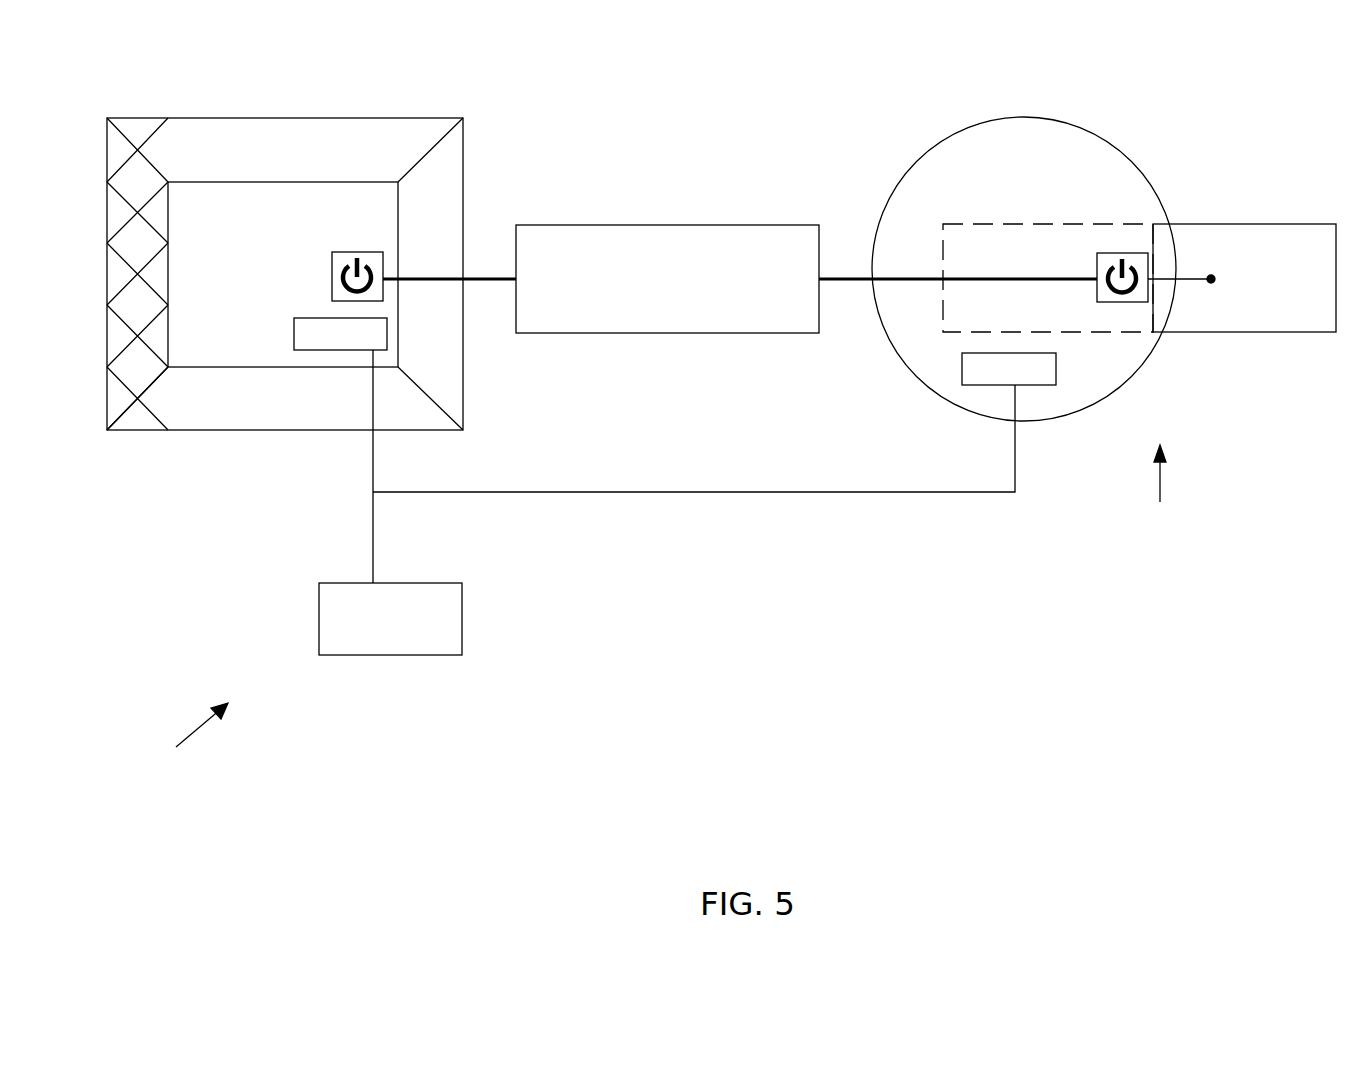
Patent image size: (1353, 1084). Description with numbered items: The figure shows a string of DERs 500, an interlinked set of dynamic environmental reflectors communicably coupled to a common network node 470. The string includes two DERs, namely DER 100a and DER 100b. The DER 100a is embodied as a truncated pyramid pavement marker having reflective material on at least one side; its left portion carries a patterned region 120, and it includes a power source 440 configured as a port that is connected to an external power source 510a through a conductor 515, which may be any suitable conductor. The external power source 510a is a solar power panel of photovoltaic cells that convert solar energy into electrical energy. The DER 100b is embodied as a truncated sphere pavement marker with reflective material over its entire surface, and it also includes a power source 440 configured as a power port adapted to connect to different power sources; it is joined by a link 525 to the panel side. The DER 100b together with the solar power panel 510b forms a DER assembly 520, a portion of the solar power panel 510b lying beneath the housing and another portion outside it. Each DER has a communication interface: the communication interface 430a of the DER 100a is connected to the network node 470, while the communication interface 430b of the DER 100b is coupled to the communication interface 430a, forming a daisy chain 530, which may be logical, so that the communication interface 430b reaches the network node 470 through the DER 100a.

The DER 100a is at (307, 430).
The DER 100b is at (1125, 382).
The grid structure 120 is at (141, 368).
The power source 440 is at (353, 247).
The communication interface 430a is at (340, 334).
The communication interface 430b is at (1009, 369).
The network node 470 is at (390, 619).
The string of DERs 500 is at (189, 738).
The external power source 510a is at (667, 279).
The solar power panel 510b is at (1210, 223).
The conductor 515 is at (477, 275).
The DER assembly 520 is at (1158, 488).
The second link 525 is at (852, 277).
The daisy chain 530 is at (693, 493).